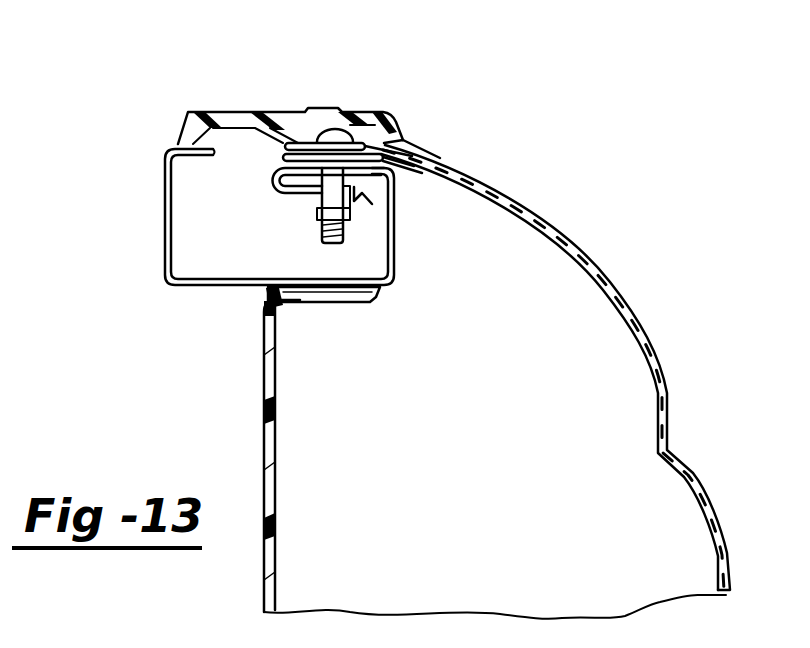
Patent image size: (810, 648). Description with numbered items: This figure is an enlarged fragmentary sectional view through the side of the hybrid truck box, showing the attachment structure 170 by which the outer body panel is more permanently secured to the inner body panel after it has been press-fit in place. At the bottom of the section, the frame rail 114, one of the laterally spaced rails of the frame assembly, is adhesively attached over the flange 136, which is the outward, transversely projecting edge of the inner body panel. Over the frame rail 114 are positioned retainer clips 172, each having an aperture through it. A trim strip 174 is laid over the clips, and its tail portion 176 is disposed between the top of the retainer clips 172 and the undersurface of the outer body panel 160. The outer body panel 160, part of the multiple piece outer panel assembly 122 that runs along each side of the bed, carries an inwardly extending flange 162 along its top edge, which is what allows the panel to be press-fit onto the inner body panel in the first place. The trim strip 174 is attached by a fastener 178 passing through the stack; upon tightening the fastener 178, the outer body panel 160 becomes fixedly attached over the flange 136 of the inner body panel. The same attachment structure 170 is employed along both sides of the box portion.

The attachment structure 170 is at (136, 163).
The trim strip 174 is at (331, 118).
The inwardly extending flange 162 is at (363, 150).
The outer body panel 160 is at (397, 146).
The tail portion 176 is at (423, 163).
The frame rail 114 is at (167, 222).
The retainer clip 172 is at (273, 184).
The fastener 178 is at (352, 236).
The outer panel assembly 122 is at (625, 280).
The outward, transversely projecting edge 136 is at (300, 300).